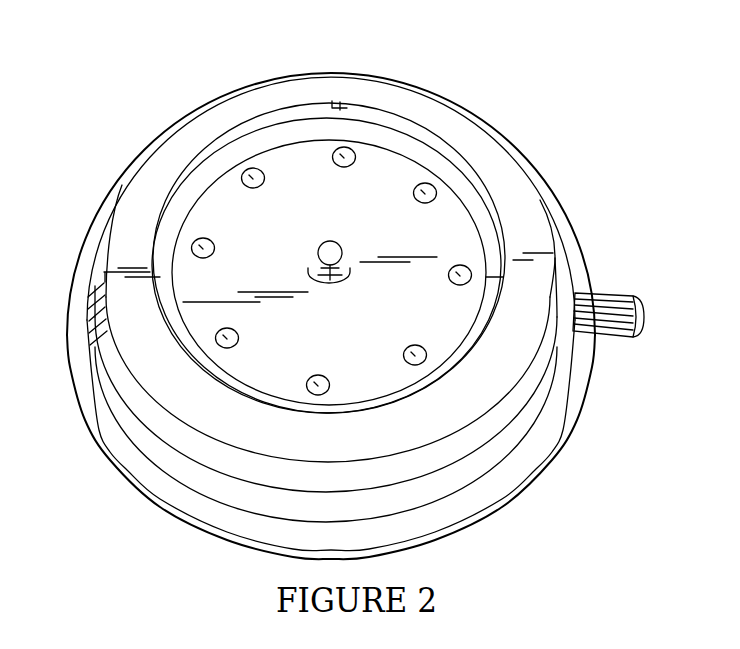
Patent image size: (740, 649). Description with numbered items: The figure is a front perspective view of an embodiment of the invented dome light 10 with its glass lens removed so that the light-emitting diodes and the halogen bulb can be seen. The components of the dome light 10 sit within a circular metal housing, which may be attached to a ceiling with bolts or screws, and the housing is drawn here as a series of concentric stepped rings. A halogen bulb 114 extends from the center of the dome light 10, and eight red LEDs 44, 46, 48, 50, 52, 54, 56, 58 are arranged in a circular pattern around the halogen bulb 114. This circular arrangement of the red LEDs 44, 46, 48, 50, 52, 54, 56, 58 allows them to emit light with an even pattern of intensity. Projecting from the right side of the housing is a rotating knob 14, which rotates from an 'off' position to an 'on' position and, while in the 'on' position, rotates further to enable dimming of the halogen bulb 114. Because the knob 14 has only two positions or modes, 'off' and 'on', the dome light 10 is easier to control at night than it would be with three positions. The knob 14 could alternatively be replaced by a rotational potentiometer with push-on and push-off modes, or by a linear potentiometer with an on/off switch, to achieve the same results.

The dome light 10 is at (132, 90).
The rotating knob 14 is at (604, 298).
The red LED 44 is at (346, 147).
The red LED 46 is at (430, 184).
The red LED 48 is at (466, 266).
The red LED 50 is at (414, 344).
The red LED 52 is at (319, 376).
The red LED 54 is at (240, 338).
The red LED 56 is at (214, 249).
The red LED 58 is at (264, 183).
The halogen bulb 114 is at (338, 243).